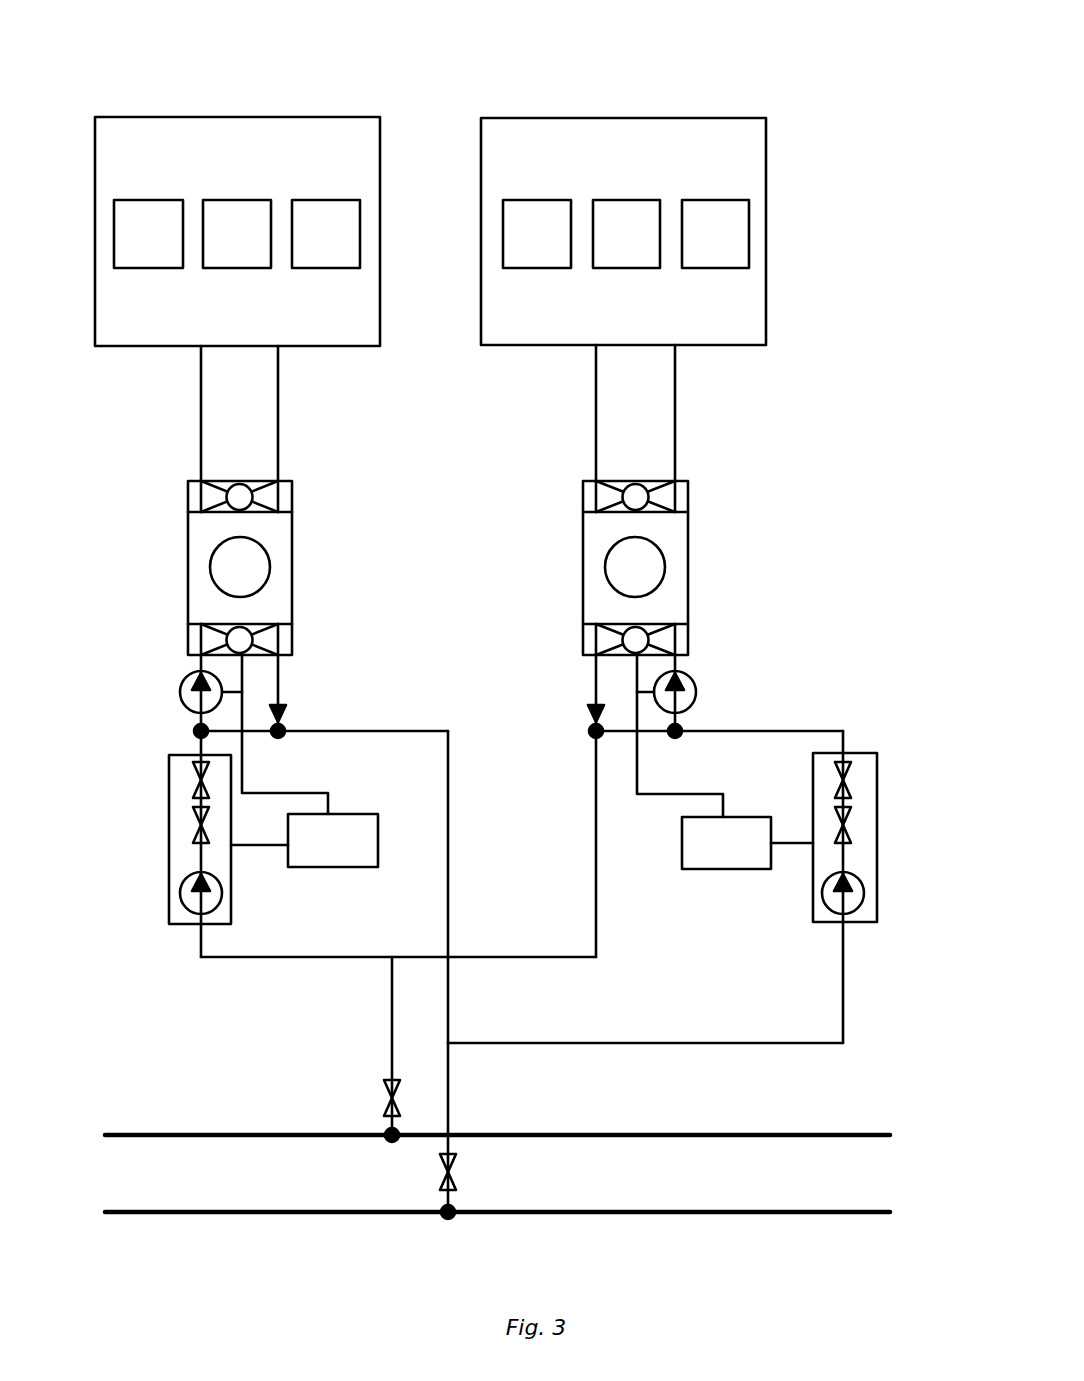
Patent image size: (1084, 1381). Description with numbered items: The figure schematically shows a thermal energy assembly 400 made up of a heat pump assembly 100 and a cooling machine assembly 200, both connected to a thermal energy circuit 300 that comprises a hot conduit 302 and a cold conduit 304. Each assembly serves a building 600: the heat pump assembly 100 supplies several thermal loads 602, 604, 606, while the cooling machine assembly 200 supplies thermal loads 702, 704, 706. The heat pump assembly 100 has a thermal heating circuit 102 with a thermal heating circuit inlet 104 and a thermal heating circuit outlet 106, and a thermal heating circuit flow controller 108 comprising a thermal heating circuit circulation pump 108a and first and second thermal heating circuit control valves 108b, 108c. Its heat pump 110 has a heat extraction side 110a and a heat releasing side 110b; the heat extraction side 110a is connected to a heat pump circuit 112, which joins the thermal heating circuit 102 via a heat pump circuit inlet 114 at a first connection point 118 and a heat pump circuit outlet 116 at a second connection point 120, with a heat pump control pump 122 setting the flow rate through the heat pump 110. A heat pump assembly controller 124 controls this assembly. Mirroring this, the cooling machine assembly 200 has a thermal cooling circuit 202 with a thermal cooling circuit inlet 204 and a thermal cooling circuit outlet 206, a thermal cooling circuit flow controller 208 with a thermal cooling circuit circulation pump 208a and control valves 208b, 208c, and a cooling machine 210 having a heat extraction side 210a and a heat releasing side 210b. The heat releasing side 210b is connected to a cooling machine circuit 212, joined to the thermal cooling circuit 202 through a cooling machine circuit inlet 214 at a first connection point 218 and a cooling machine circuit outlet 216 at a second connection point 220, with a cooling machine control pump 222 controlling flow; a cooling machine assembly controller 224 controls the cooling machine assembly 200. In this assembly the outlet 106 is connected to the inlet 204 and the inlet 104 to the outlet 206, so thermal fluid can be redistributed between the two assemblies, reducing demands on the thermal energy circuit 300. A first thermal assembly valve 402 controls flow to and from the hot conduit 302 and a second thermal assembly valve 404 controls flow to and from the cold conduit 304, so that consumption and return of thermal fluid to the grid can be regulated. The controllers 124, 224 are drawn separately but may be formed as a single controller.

The heat pump assembly 100 is at (346, 502).
The thermal heating circuit 102 is at (475, 829).
The thermal heating circuit inlet 104 is at (340, 1049).
The thermal heating circuit outlet 106 is at (388, 1103).
The thermal heating circuit flow controller 108 is at (140, 844).
The thermal heating circuit circulation pump 108a is at (185, 895).
The first thermal heating circuit control valve 108b is at (195, 825).
The second thermal heating circuit control valve 108c is at (195, 780).
The heat pump 110 is at (242, 566).
The heat extraction side 110a is at (293, 635).
The heat releasing side 110b is at (188, 497).
The heat pump circuit 112 is at (139, 659).
The heat pump circuit inlet 114 is at (190, 712).
The heat pump circuit outlet 116 is at (290, 718).
The first connection point 118 is at (195, 731).
The second connection point 120 is at (285, 735).
The heat pump control pump 122 is at (190, 678).
The heat pump assembly controller 124 is at (304, 840).
The cooling machine assembly 200 is at (772, 485).
The thermal cooling circuit 202 is at (824, 702).
The thermal cooling circuit inlet 204 is at (843, 990).
The thermal cooling circuit outlet 206 is at (596, 935).
The thermal cooling circuit flow controller 208 is at (887, 887).
The thermal cooling circuit circulation pump 208a is at (877, 885).
The first thermal cooling circuit control valve 208b is at (877, 805).
The second thermal cooling circuit control valve 208c is at (877, 765).
The cooling machine 210 is at (635, 568).
The heat extraction side 210a is at (583, 500).
The heat releasing side 210b is at (688, 635).
The cooling machine circuit 212 is at (571, 671).
The cooling machine circuit inlet 214 is at (680, 730).
The cooling machine circuit outlet 216 is at (592, 727).
The first connection point 218 is at (680, 735).
The second connection point 220 is at (592, 737).
The cooling machine control pump 222 is at (696, 690).
The cooling machine assembly controller 224 is at (747, 843).
The thermal energy circuit 300 is at (192, 1108).
The hot conduit 302 is at (108, 1132).
The cold conduit 304 is at (153, 1215).
The thermal energy assembly 400 is at (426, 372).
The first thermal assembly valve 402 is at (385, 1118).
The second thermal assembly valve 404 is at (440, 1192).
The building 600 is at (430, 175).
The thermal load 602 is at (148, 234).
The thermal load 604 is at (237, 234).
The thermal load 606 is at (326, 234).
The thermal load 702 is at (537, 234).
The thermal load 704 is at (626, 234).
The thermal load 706 is at (715, 234).